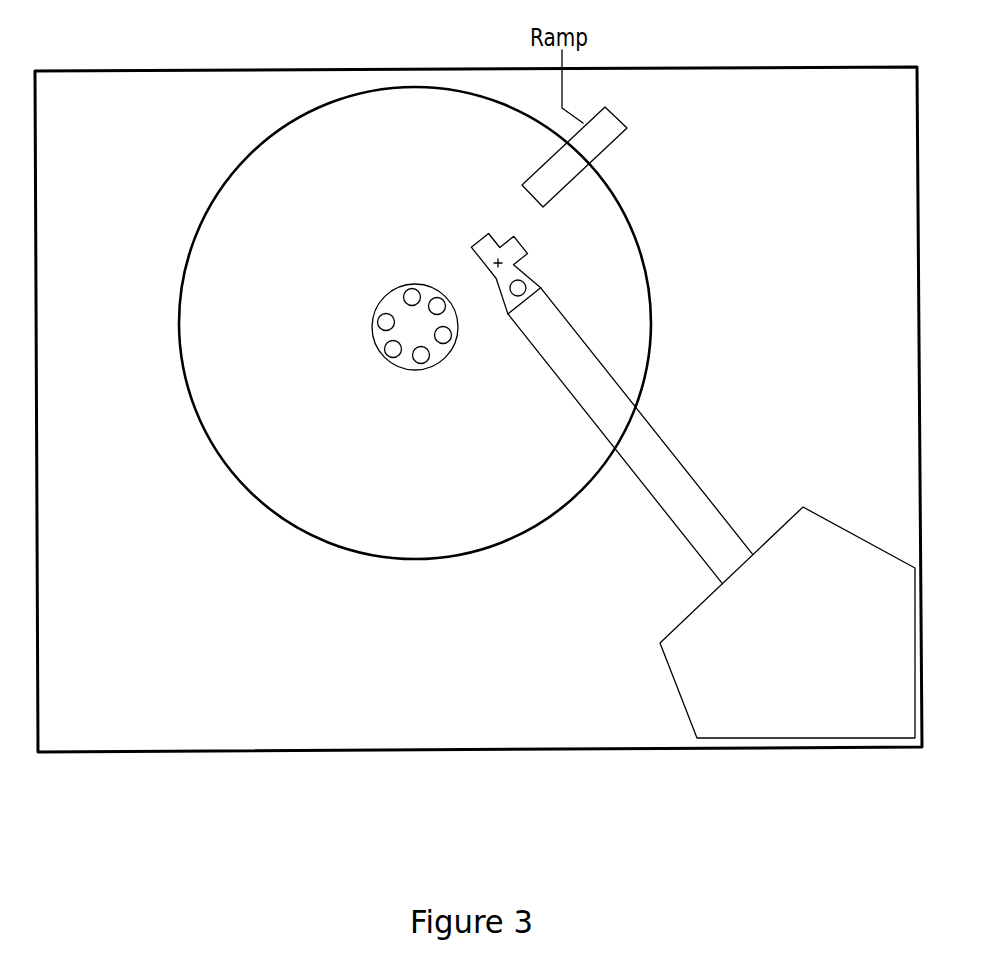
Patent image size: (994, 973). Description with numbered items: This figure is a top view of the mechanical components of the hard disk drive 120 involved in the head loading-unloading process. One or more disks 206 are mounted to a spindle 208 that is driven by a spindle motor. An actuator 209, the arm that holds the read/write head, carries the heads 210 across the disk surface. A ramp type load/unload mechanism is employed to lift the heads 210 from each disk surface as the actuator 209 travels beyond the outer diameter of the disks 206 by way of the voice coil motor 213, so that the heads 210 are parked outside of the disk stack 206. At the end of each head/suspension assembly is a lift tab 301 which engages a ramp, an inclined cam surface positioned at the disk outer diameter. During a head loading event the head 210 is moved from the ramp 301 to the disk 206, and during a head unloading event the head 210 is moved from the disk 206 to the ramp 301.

The hard disk drive 120 is at (478, 381).
The disk 206 is at (441, 323).
The spindle 208 is at (415, 295).
The actuator 209 is at (630, 432).
The head 210 is at (541, 259).
The voice coil motor 213 is at (787, 609).
The lift tab 301 is at (582, 210).